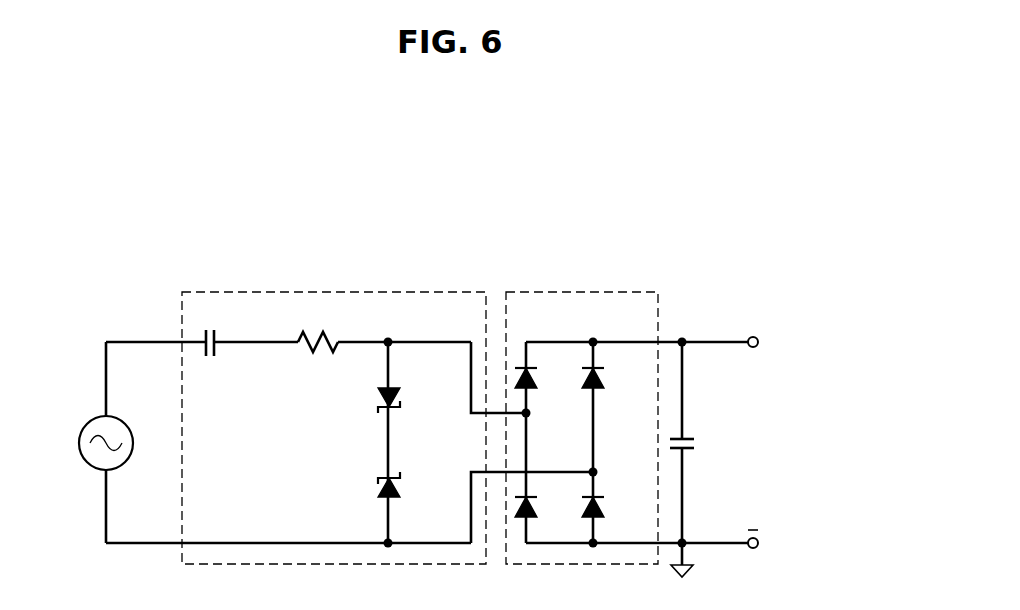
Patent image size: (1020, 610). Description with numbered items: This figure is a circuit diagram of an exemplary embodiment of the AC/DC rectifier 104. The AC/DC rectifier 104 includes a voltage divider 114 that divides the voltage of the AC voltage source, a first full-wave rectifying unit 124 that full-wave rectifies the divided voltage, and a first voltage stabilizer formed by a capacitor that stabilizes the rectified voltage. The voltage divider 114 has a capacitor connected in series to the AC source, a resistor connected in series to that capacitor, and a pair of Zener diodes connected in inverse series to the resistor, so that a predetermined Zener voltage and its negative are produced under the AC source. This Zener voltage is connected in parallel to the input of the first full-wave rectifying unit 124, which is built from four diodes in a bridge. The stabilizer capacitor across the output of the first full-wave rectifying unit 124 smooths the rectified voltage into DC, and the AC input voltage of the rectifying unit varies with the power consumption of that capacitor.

The AC/DC rectifier 104 is at (494, 192).
The voltage divider 114 is at (333, 292).
The first full-wave rectifying unit 124 is at (583, 292).